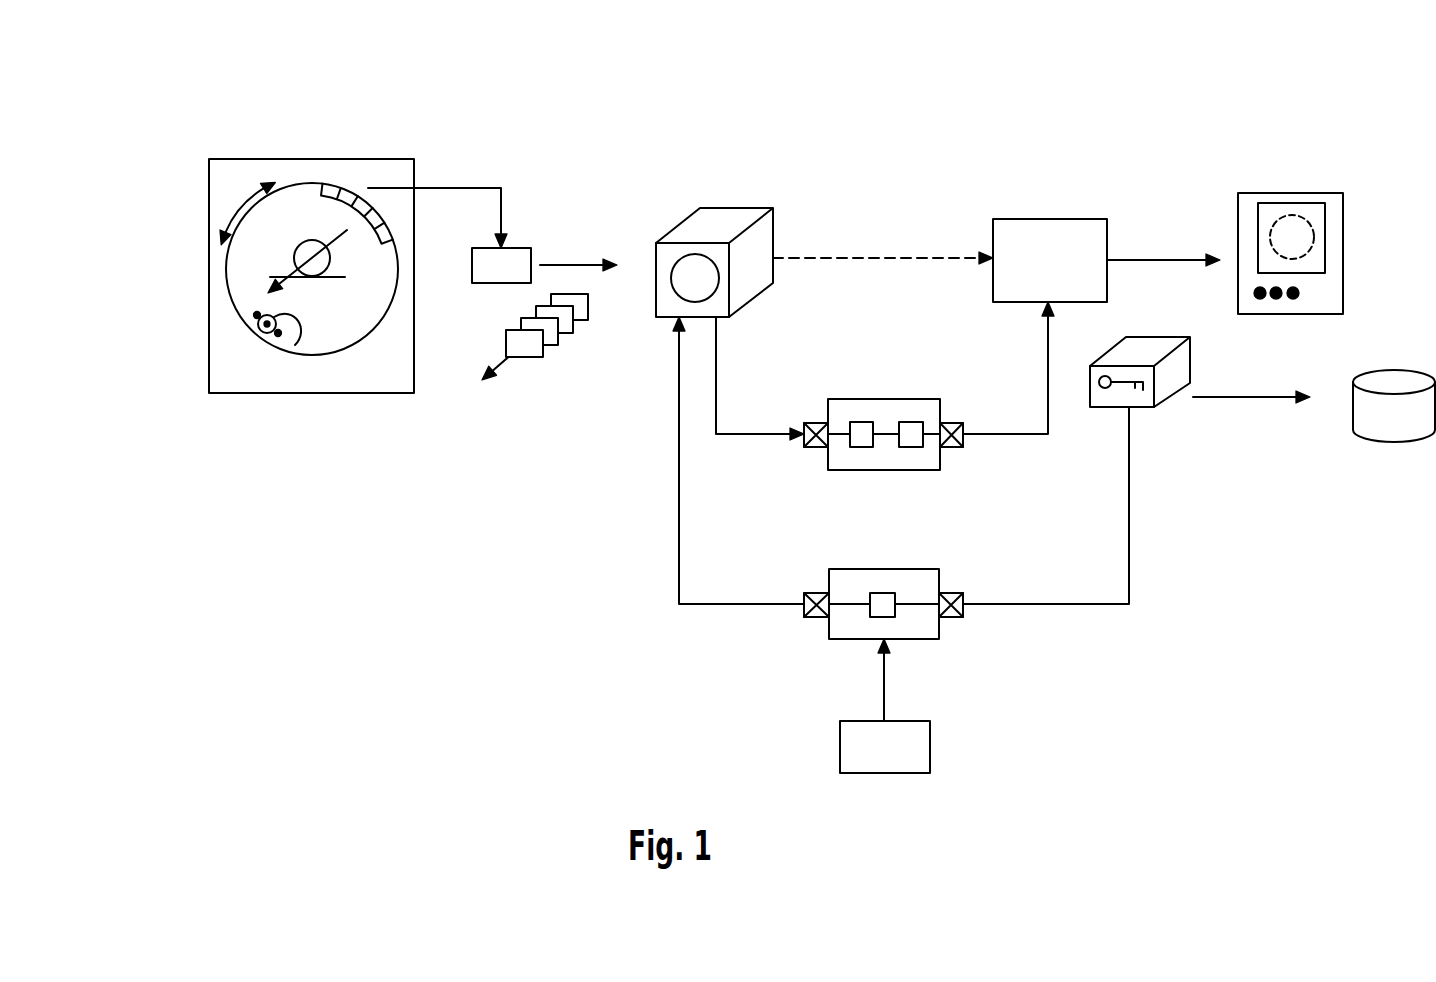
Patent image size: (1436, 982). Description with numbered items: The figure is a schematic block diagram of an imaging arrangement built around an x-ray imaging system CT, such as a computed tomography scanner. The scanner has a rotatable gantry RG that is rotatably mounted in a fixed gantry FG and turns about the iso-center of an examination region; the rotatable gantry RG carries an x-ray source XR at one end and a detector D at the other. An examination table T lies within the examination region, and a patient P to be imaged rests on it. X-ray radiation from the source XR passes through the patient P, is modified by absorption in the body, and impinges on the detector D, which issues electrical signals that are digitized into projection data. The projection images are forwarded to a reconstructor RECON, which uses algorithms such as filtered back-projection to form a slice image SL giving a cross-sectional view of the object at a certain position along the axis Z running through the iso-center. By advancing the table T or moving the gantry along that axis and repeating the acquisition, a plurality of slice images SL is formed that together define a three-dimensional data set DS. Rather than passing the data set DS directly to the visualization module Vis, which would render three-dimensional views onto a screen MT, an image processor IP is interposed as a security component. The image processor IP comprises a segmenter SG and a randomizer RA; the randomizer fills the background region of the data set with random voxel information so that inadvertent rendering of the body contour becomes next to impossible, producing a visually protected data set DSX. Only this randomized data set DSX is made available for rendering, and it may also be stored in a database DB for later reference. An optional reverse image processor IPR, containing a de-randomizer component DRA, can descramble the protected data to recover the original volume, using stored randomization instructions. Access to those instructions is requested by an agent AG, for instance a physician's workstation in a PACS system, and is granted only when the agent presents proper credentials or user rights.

The x-ray imaging system CT is at (338, 253).
The fixed gantry FG is at (227, 159).
The rotatable gantry RG is at (247, 322).
The detector D is at (348, 190).
The x-ray source XR is at (295, 345).
The patient P is at (335, 265).
The examination table T is at (345, 280).
The z position Z is at (401, 311).
The reconstructor RECON is at (517, 247).
The slice image SL is at (567, 342).
The 3D data set DS is at (722, 207).
The visualization module Vis is at (1023, 230).
The screen MT is at (1282, 193).
The image processor IP is at (885, 394).
The segmenter SG is at (860, 423).
The randomizer RA is at (917, 423).
The visually protected data set DSX is at (1111, 470).
The database DB is at (1368, 425).
The reverse image processor IPR is at (847, 515).
The de-randomizer component DRA is at (883, 593).
The agent AG is at (918, 750).